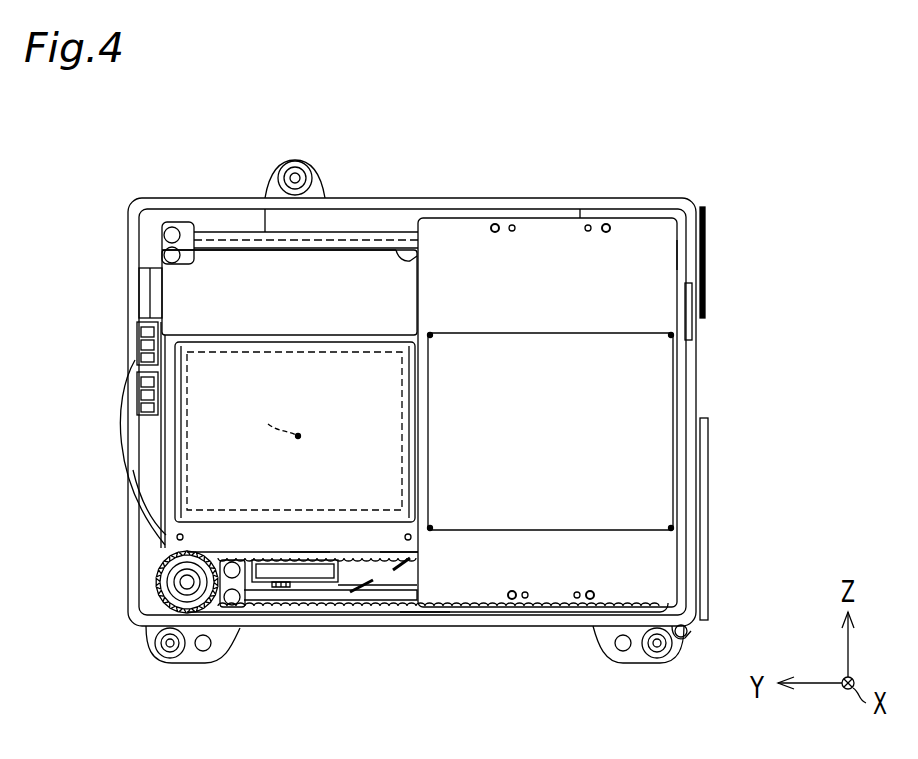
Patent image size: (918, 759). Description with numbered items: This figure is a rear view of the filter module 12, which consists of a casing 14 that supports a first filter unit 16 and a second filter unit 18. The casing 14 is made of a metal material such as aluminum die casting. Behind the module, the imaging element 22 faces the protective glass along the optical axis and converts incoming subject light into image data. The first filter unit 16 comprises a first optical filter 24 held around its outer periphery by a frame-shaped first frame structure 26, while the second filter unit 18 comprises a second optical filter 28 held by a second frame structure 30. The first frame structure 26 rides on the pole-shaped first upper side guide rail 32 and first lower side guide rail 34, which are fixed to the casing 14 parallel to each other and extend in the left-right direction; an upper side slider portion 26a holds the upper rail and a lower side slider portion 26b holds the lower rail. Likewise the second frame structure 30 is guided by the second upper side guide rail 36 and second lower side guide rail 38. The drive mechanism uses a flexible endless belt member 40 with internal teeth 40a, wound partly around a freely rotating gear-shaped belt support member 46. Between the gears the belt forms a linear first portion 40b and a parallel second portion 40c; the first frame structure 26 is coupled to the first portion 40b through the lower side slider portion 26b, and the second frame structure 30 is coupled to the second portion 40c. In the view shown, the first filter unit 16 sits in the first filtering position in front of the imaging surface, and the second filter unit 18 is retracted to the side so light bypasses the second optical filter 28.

The filter module 12 is at (100, 182).
The casing 14 is at (646, 200).
The first filter unit 16 is at (178, 293).
The second filter unit 18 is at (668, 254).
The imaging element 22 is at (185, 440).
The first optical filter 24 is at (282, 475).
The first frame structure 26 is at (282, 307).
The upper side slider portion 26a is at (262, 252).
The lower side slider portion 26b is at (316, 584).
The second optical filter 28 is at (542, 437).
The second frame structure 30 is at (537, 297).
The first upper side guide rail 32 is at (406, 250).
The first lower side guide rail 34 is at (355, 572).
The second upper side guide rail 36 is at (350, 233).
The second lower side guide rail 38 is at (362, 600).
The belt member 40 is at (283, 612).
The internal teeth 40a is at (400, 562).
The first portion 40b is at (306, 553).
The second portion 40c is at (426, 612).
The belt support member 46 is at (158, 578).